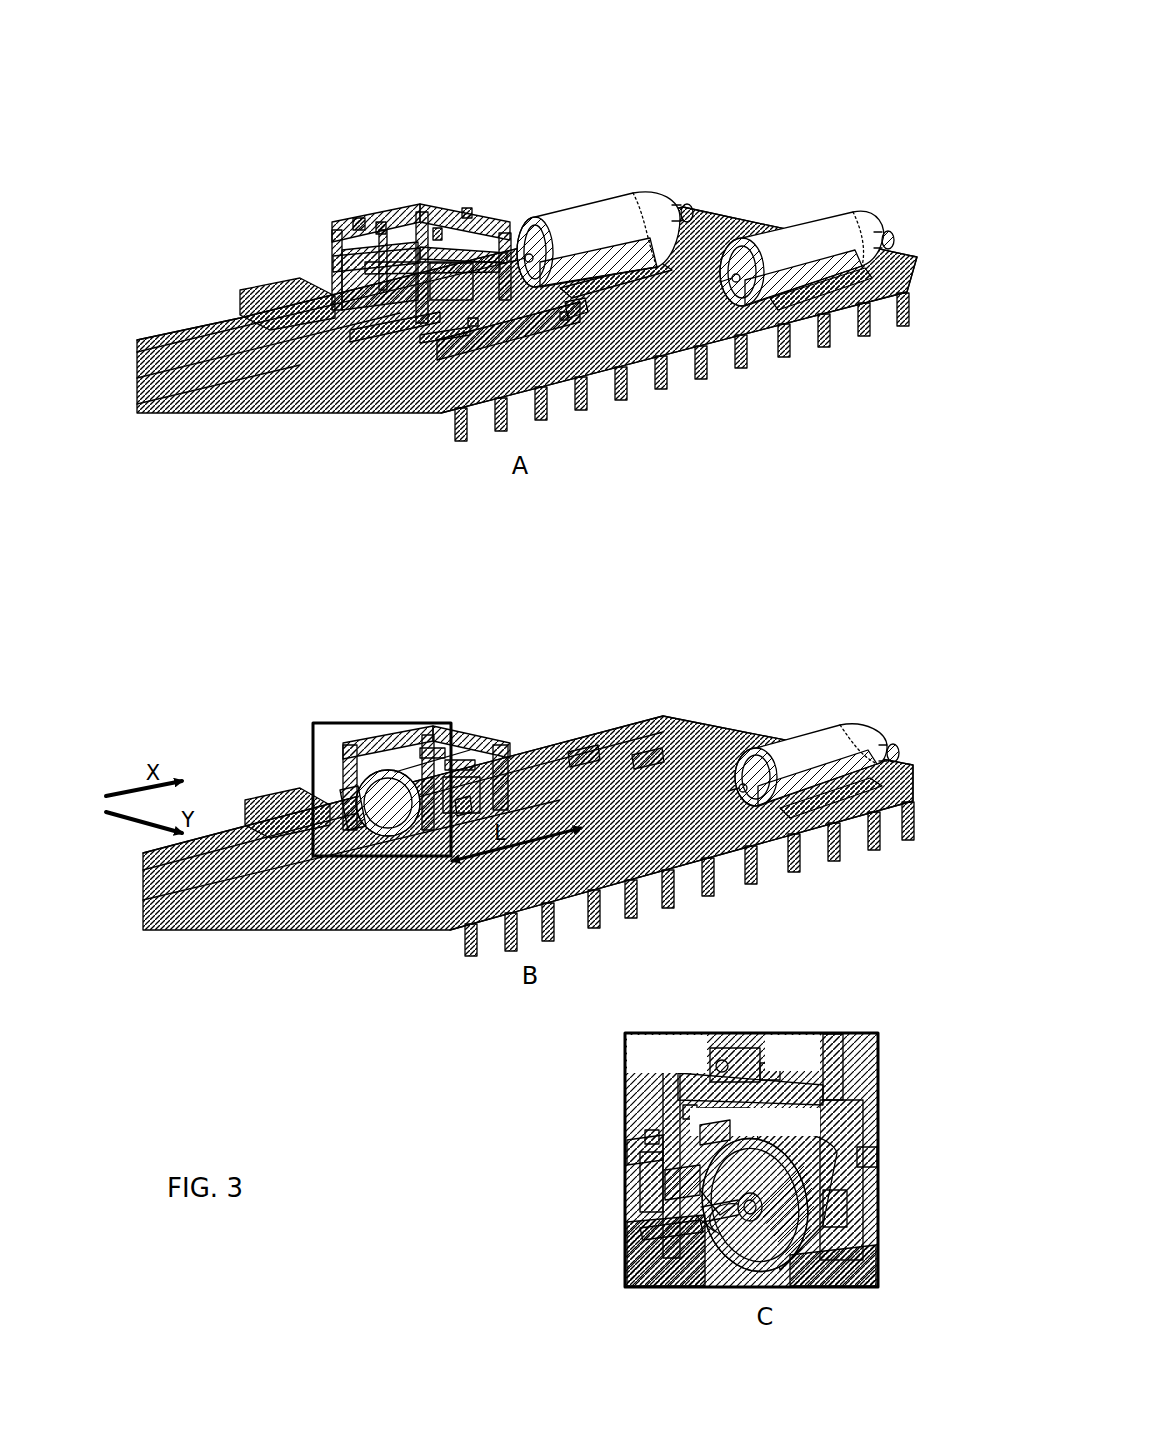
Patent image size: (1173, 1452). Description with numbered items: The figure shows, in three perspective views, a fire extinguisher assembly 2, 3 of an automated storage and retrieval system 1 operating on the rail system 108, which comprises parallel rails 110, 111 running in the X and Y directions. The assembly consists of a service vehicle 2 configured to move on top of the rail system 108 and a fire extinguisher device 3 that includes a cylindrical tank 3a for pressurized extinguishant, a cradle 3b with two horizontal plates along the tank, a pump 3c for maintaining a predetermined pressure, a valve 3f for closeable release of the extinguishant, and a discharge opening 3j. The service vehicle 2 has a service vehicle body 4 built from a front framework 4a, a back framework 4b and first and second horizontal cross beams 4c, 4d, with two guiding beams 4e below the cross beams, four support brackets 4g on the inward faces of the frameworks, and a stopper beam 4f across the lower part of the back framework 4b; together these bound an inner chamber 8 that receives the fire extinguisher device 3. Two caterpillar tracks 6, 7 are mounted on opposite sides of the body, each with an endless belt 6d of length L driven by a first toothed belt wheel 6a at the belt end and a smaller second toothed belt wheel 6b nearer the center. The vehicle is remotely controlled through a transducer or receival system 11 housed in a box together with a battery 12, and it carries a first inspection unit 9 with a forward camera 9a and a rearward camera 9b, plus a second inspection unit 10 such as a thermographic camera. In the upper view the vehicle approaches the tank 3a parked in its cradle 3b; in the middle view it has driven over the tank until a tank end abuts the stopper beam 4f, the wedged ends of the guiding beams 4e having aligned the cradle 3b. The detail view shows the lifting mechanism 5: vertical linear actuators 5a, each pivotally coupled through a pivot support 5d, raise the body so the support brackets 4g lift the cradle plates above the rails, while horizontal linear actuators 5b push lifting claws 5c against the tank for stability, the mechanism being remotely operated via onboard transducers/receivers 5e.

The automated storage and retrieval system 1 is at (665, 685).
The service vehicle 2 is at (542, 681).
The fire extinguisher device 3 is at (665, 685).
The cylindrical tank 3a is at (621, 736).
The fire extinguisher support 3b is at (751, 465).
The pump 3c is at (821, 428).
The valve 3f is at (670, 812).
The discharge opening 3j is at (674, 1280).
The service vehicle body 4 is at (589, 681).
The front framework 4a is at (539, 730).
The back framework 4b is at (492, 478).
The first horizontal cross beam 4c is at (500, 212).
The second horizontal cross beam 4d is at (577, 580).
The guiding beams 4e is at (455, 355).
The stopper beam 4f is at (344, 408).
The support brackets 4g is at (572, 1172).
The lifting mechanism 5 is at (632, 941).
The vertical linear actuators 5a is at (640, 1006).
The horizontal linear actuators 5b is at (547, 856).
The lifting claws 5c is at (510, 883).
The pivot support 5d is at (613, 1266).
The transducers/receivers 5e is at (522, 1125).
The caterpillar track 6 is at (570, 415).
The first toothed belt wheel 6a is at (667, 380).
The second toothed belt wheel 6b is at (563, 405).
The endless belt 6d is at (458, 417).
The caterpillar track 7 is at (228, 541).
The inner chamber 8 is at (451, 161).
The first inspection unit 9 is at (637, 590).
The forward camera 9a is at (844, 1021).
The rearward camera 9b is at (491, 164).
The second inspection unit 10 is at (575, 605).
The transducer or receival system 11 is at (559, 881).
The battery 12 is at (910, 1117).
The rail system 108 is at (496, 581).
The rails 110 is at (653, 665).
The rails 111 is at (594, 672).